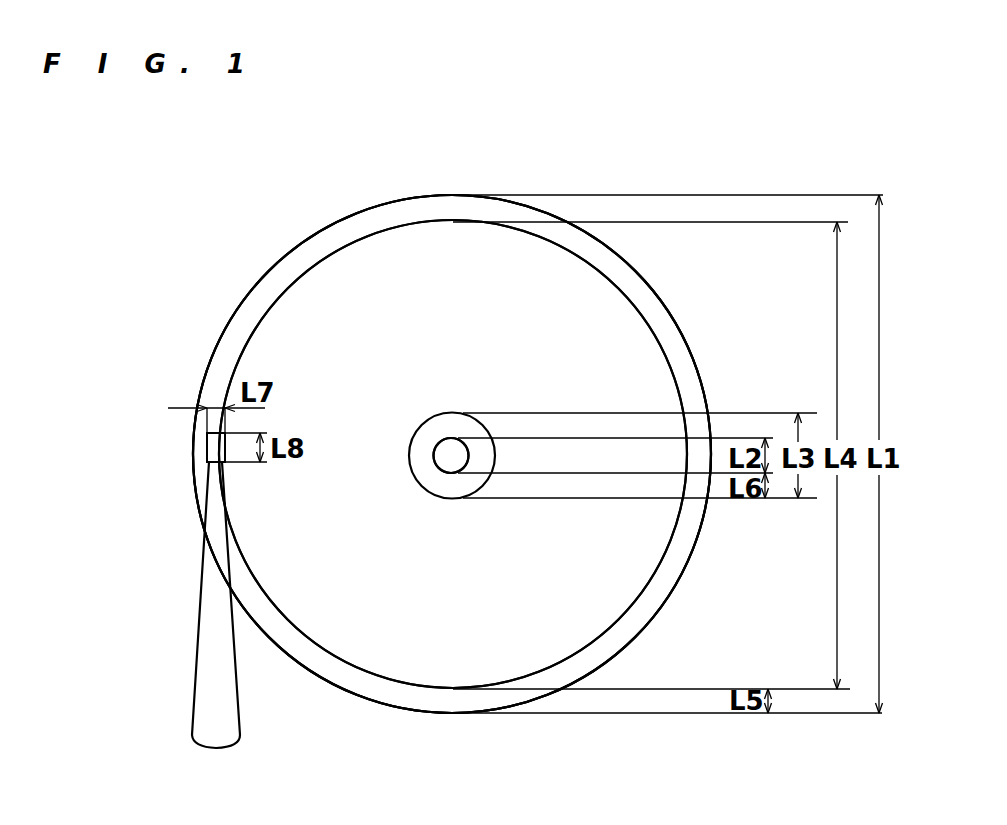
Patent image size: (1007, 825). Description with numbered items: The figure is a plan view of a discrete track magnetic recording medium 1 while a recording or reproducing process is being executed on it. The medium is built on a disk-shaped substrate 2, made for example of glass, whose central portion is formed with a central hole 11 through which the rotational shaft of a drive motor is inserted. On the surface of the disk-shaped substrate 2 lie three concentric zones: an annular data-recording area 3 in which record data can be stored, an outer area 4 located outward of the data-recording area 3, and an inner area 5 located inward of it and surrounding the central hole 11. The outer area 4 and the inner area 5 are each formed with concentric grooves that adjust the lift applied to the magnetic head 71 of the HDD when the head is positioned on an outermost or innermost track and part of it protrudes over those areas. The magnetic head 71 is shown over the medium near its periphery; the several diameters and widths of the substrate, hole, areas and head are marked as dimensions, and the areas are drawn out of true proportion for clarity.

The discrete track magnetic recording medium 1 is at (258, 242).
The disk-shaped substrate 2 is at (678, 323).
The data-recording area 3 is at (626, 345).
The outer area 4 is at (688, 377).
The inner area 5 is at (420, 450).
The central hole 11 is at (446, 455).
The magnetic head 71 is at (207, 440).